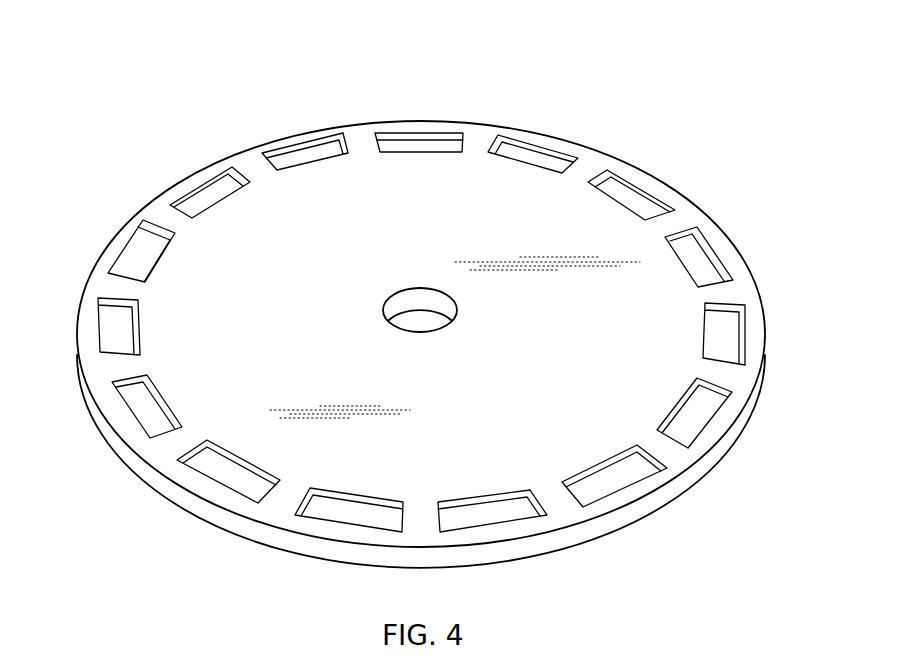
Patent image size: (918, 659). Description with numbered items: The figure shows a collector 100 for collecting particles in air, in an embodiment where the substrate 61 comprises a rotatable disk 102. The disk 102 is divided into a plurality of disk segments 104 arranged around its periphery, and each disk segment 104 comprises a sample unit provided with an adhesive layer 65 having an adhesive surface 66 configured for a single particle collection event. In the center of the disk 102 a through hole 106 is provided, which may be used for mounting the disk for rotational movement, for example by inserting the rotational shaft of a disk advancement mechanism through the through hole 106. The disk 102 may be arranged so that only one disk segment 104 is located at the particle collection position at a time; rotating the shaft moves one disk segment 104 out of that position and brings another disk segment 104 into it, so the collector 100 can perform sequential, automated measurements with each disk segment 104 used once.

The collector 100 is at (698, 64).
The rotatable disk 102 is at (97, 404).
The disk segment 104 is at (447, 293).
The through hole 106 is at (427, 293).
The substrate 61 is at (168, 217).
The adhesive layer 65 is at (322, 150).
The adhesive surface 66 is at (445, 142).